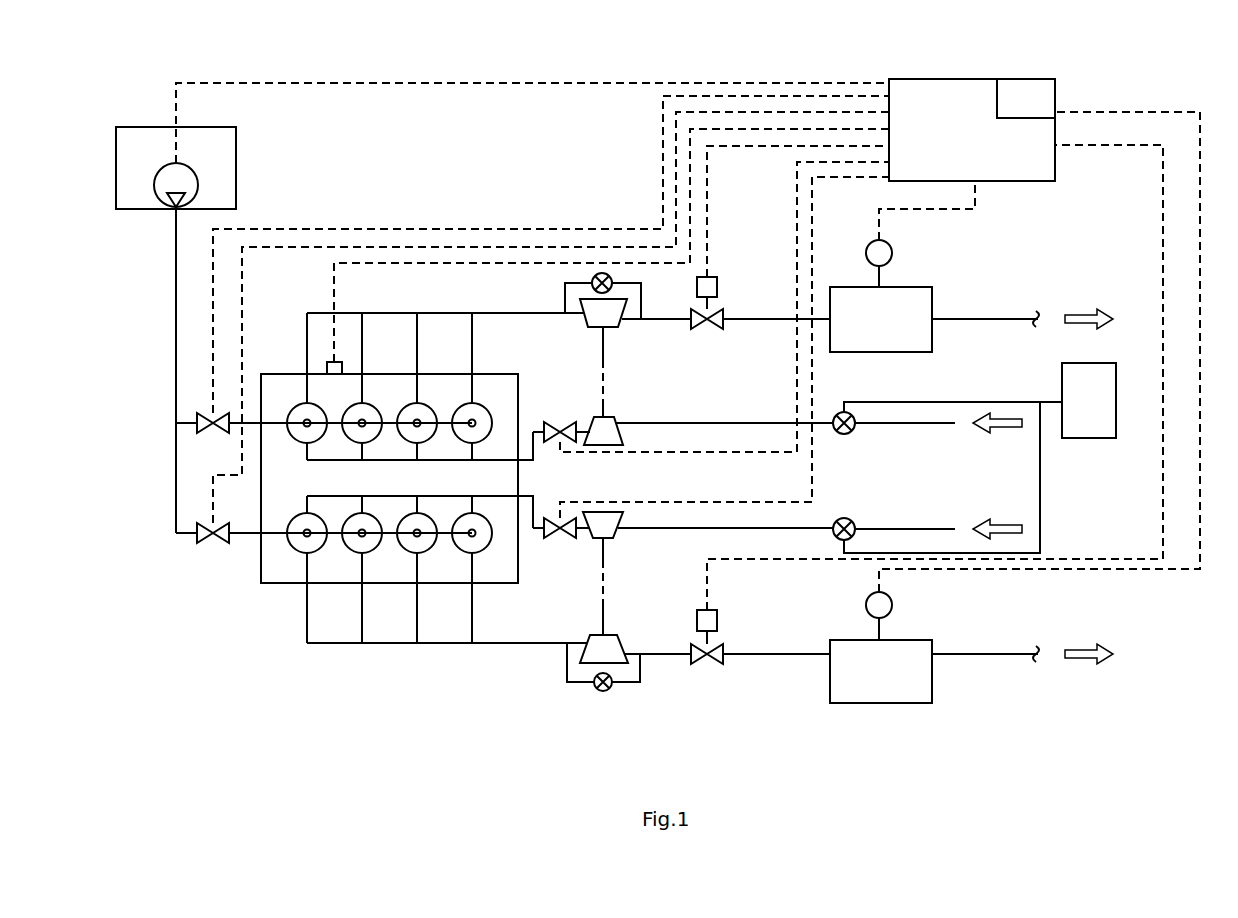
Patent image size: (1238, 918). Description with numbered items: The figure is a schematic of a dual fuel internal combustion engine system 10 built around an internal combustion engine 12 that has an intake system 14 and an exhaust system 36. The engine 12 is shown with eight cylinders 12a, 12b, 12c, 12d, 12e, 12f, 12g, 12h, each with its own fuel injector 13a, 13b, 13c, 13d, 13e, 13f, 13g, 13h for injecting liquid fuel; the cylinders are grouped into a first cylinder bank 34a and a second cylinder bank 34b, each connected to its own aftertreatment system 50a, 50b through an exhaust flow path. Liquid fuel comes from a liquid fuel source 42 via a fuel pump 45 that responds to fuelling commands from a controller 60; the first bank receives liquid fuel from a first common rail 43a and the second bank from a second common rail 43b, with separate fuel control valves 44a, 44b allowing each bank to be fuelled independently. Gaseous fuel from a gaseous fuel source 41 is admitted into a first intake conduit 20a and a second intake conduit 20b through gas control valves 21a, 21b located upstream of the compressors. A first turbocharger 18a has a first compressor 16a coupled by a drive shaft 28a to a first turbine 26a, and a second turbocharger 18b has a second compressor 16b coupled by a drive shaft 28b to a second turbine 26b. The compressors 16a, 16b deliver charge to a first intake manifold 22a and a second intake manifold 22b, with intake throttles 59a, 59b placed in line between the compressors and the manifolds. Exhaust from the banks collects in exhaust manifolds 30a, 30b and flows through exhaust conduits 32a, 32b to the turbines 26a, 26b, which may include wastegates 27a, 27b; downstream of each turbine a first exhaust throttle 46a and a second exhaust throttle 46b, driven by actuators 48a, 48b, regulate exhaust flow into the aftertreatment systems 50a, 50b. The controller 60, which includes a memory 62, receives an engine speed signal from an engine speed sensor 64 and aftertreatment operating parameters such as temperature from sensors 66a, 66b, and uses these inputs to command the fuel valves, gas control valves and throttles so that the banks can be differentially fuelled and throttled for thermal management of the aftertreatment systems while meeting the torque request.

The internal combustion engine system 10 is at (101, 89).
The internal combustion engine 12 is at (248, 560).
The cylinder 12a is at (296, 409).
The cylinder 12b is at (351, 409).
The cylinder 12c is at (406, 409).
The cylinder 12d is at (461, 409).
The cylinder 12e is at (295, 548).
The cylinder 12f is at (350, 548).
The cylinder 12g is at (405, 548).
The cylinder 12h is at (460, 548).
The fuel injector 13a is at (305, 432).
The fuel injector 13b is at (360, 432).
The fuel injector 13c is at (415, 432).
The fuel injector 13d is at (470, 432).
The fuel injector 13e is at (303, 521).
The fuel injector 13f is at (358, 521).
The fuel injector 13g is at (413, 521).
The fuel injector 13h is at (468, 521).
The intake system 14 is at (620, 484).
The first compressor 16a is at (605, 416).
The second compressor 16b is at (606, 540).
The first turbocharger 18a is at (621, 373).
The second turbocharger 18b is at (621, 599).
The first intake conduit 20a is at (940, 428).
The second intake conduit 20b is at (908, 527).
The first gas control valve 21a is at (850, 436).
The second gas control valve 21b is at (846, 520).
The first intake manifold 22a is at (505, 458).
The second intake manifold 22b is at (546, 532).
The first turbine 26a is at (580, 320).
The second turbine 26b is at (596, 636).
The wastegate 27a is at (612, 281).
The wastegate 27b is at (603, 691).
The drive shaft 28a is at (605, 337).
The drive shaft 28b is at (605, 618).
The exhaust manifold 30a is at (350, 310).
The exhaust manifold 30b is at (340, 648).
The exhaust conduit 32a is at (551, 311).
The exhaust conduit 32b is at (520, 648).
The first cylinder bank 34a is at (483, 392).
The second cylinder bank 34b is at (483, 561).
The exhaust system 36 is at (473, 650).
The gaseous fuel source 41 is at (980, 458).
The liquid fuel source 42 is at (237, 140).
The first common rail 43a is at (246, 418).
The second common rail 43b is at (240, 529).
The fuel control valve 44a is at (205, 436).
The fuel control valve 44b is at (205, 546).
The fuel pump 45 is at (161, 170).
The first exhaust throttle 46a is at (712, 330).
The second exhaust throttle 46b is at (712, 665).
The actuator 48a is at (708, 276).
The actuator 48b is at (708, 608).
The aftertreatment system 50a is at (936, 341).
The aftertreatment system 50b is at (936, 691).
The intake throttle 59a is at (562, 420).
The intake throttle 59b is at (560, 540).
The controller 60 is at (972, 130).
The memory 62 is at (1048, 86).
The engine speed sensor 64 is at (327, 362).
The sensor 66a is at (892, 252).
The sensor 66b is at (892, 604).